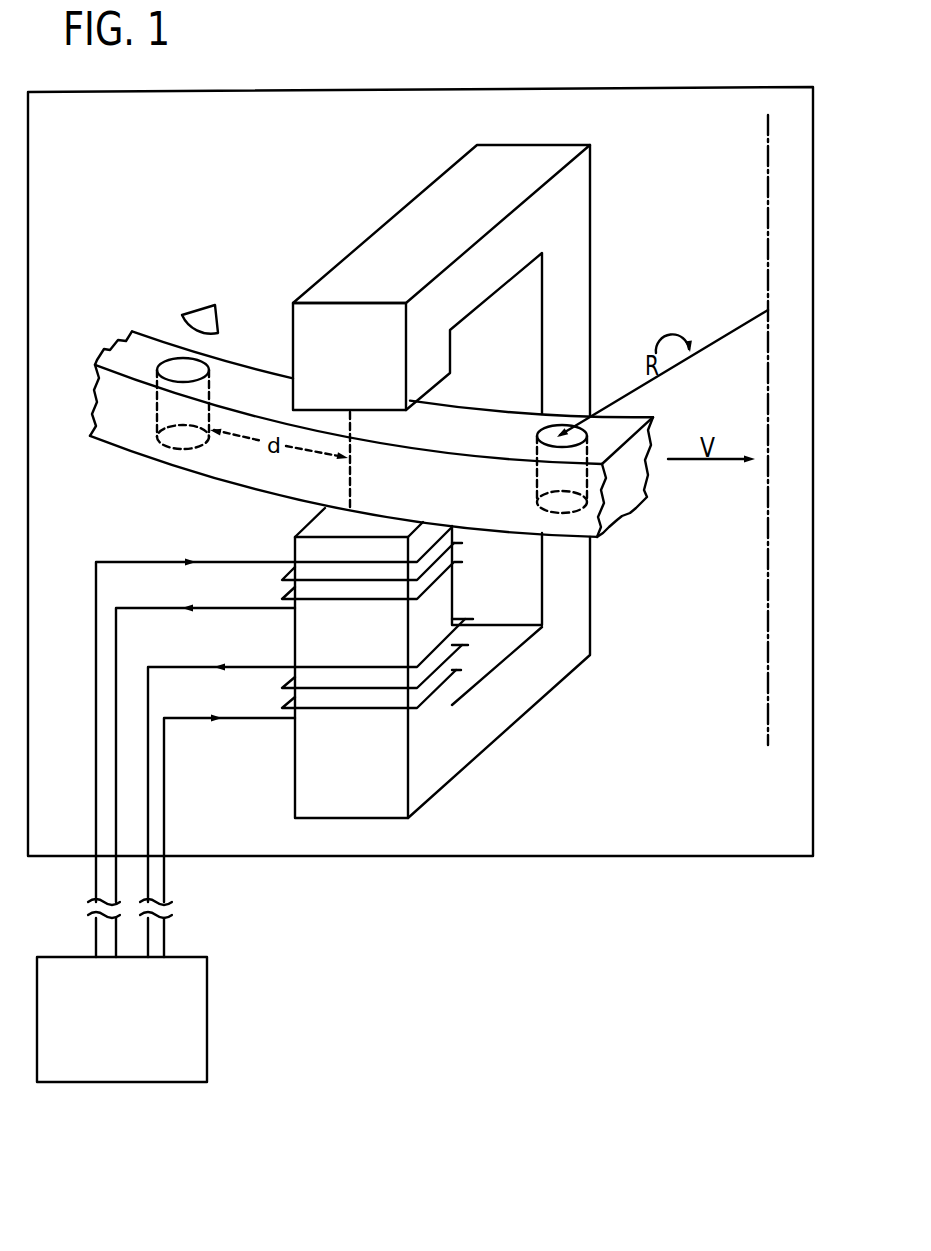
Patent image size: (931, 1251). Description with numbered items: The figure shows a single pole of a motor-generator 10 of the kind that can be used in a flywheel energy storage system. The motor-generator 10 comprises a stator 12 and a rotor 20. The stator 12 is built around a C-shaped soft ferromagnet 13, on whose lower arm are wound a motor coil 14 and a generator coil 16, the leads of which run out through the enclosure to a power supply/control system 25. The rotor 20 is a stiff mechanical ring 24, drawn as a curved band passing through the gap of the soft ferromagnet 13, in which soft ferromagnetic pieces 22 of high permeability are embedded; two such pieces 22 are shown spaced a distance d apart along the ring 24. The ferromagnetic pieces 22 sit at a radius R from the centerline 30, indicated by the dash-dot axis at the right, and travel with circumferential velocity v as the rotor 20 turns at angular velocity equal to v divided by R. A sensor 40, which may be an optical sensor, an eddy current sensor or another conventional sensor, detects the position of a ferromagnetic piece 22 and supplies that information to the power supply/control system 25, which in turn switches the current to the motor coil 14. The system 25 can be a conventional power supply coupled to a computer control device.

The motor-generator 10 is at (459, 88).
The stator 12 is at (441, 481).
The soft ferromagnet 13 is at (403, 285).
The motor coil 14 is at (282, 553).
The generator coil 16 is at (292, 662).
The rotor 20 is at (150, 424).
The soft ferromagnetic pieces 22 is at (170, 368).
The stiff mechanical ring 24 is at (269, 401).
The power supply/control system 25 is at (207, 1020).
The centerline 30 is at (767, 683).
The sensor 40 is at (202, 308).